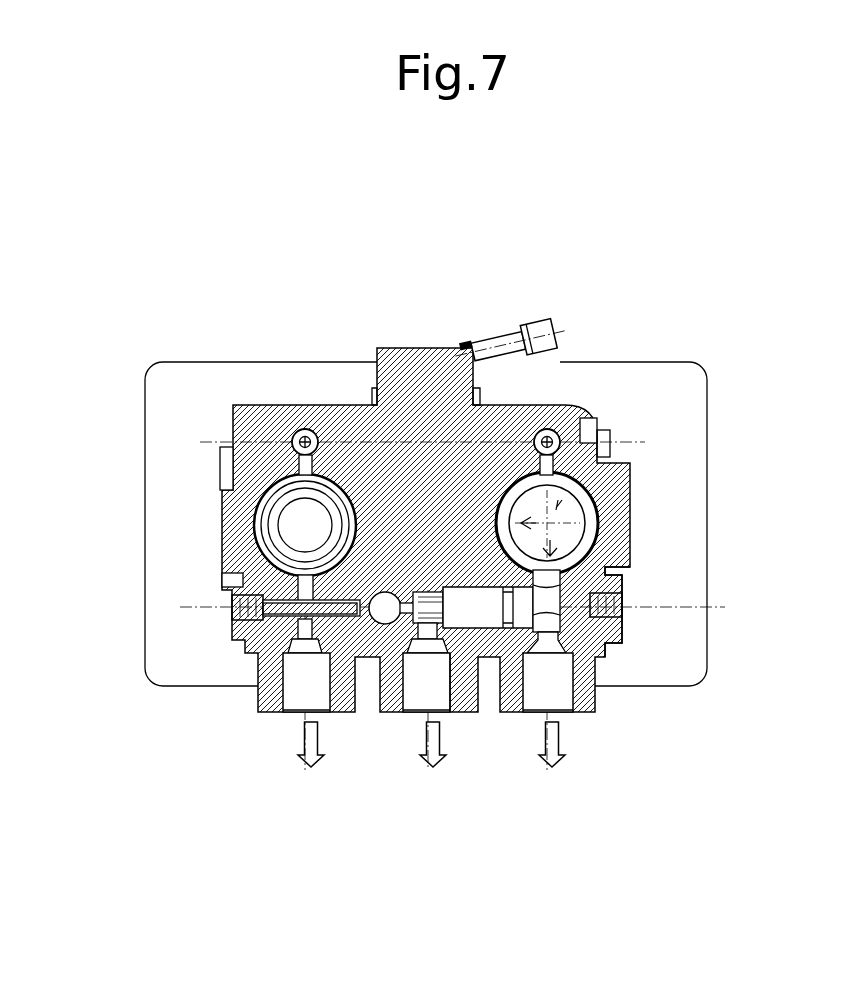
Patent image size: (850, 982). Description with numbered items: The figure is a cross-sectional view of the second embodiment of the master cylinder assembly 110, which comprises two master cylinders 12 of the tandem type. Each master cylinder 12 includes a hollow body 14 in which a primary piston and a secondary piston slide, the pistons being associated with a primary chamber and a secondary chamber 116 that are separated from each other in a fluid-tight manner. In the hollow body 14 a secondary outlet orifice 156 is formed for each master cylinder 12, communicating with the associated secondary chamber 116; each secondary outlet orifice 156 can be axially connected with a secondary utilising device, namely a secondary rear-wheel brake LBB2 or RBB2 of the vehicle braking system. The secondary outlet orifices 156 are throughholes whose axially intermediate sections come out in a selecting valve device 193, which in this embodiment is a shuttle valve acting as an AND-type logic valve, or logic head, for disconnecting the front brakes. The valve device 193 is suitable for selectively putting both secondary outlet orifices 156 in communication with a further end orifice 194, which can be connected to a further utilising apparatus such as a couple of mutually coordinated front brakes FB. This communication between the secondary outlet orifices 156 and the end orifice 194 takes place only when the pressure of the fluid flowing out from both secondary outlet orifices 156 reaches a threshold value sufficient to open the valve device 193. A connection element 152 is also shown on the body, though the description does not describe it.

The master cylinder assembly 110 is at (631, 229).
The master cylinder 12 is at (262, 550).
The hollow body 14 is at (337, 405).
The connection pipe 152 is at (510, 340).
The secondary chamber 116 is at (256, 500).
The secondary outlet orifice 156 is at (303, 563).
The selecting valve device 193 is at (633, 630).
The end orifice 194 is at (449, 677).
The additional rear brake LBB2 is at (305, 768).
The front brakes FB is at (430, 768).
The additional rear brake RBB2 is at (548, 768).